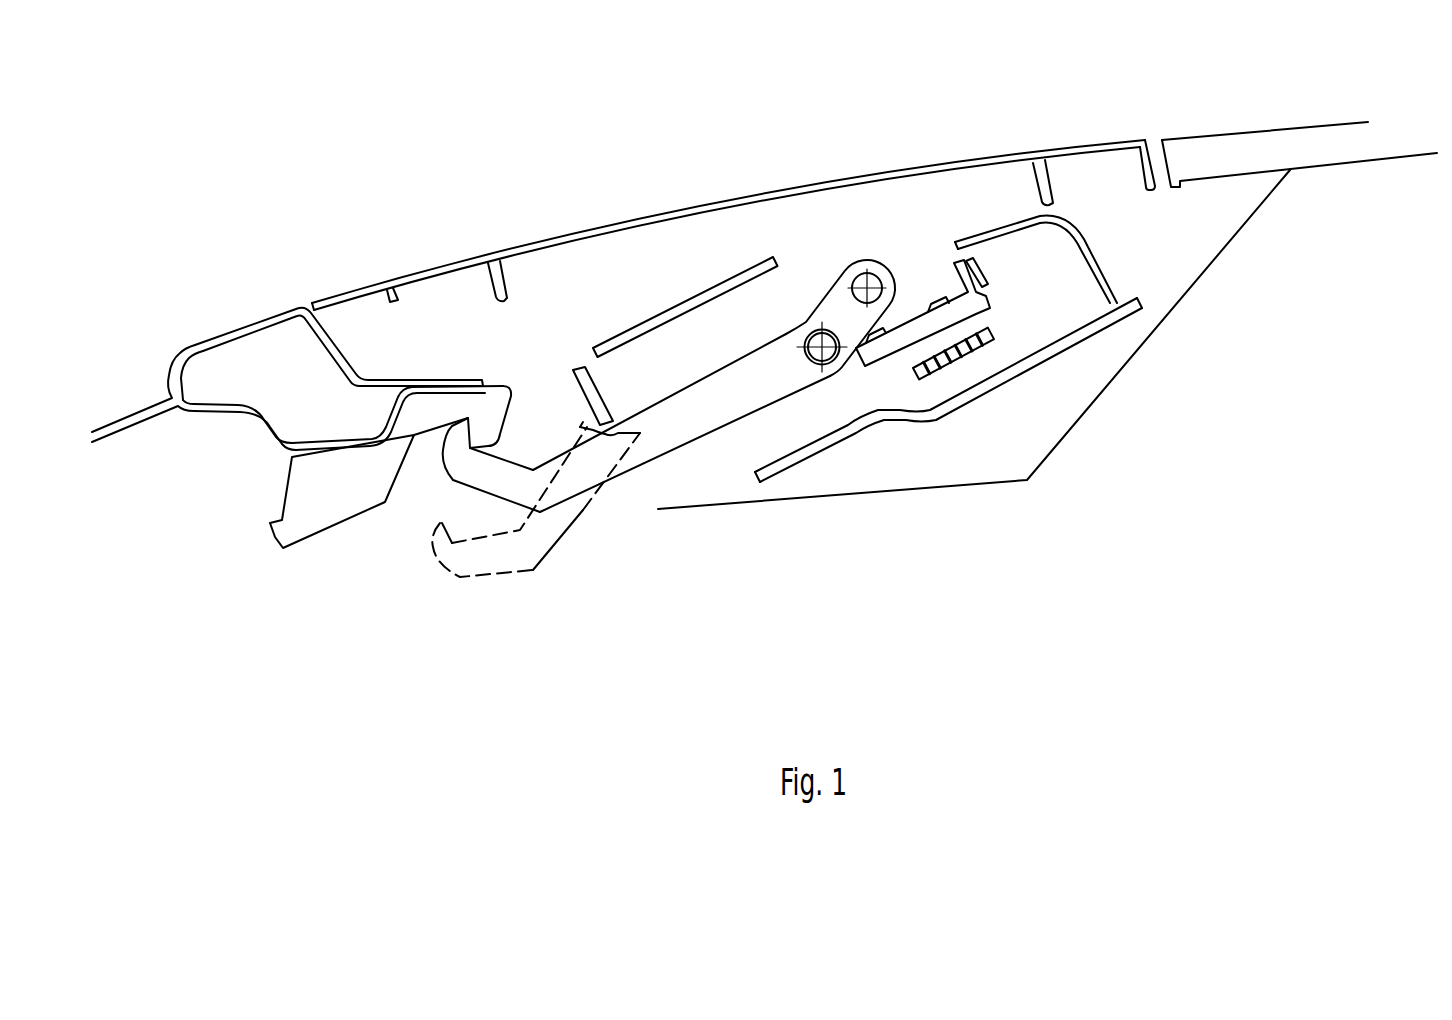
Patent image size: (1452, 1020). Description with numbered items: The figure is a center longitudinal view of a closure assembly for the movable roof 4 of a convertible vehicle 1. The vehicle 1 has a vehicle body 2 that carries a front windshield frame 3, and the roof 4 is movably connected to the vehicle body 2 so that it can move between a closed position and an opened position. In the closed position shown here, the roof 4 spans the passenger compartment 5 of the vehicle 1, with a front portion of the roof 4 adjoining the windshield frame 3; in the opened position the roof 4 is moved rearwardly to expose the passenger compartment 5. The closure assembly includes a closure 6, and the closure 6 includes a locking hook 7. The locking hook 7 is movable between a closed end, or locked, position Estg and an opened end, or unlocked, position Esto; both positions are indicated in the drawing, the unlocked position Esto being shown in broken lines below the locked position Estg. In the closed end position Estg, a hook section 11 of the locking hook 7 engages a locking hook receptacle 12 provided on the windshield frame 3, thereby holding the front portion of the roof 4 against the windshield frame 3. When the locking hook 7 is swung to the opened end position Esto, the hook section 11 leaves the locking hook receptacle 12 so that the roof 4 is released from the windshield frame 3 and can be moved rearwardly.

The vehicle 1 is at (411, 189).
The vehicle body 2 is at (145, 342).
The front windshield frame 3 is at (266, 301).
The roof 4 is at (740, 171).
The passenger compartment 5 is at (990, 556).
The closure 6 is at (693, 479).
The locking hook 7 is at (635, 491).
The hook section 11 is at (427, 484).
The locking hook receptacle 12 is at (507, 479).
The closed end position Estg is at (536, 425).
The opened end position Esto is at (471, 597).